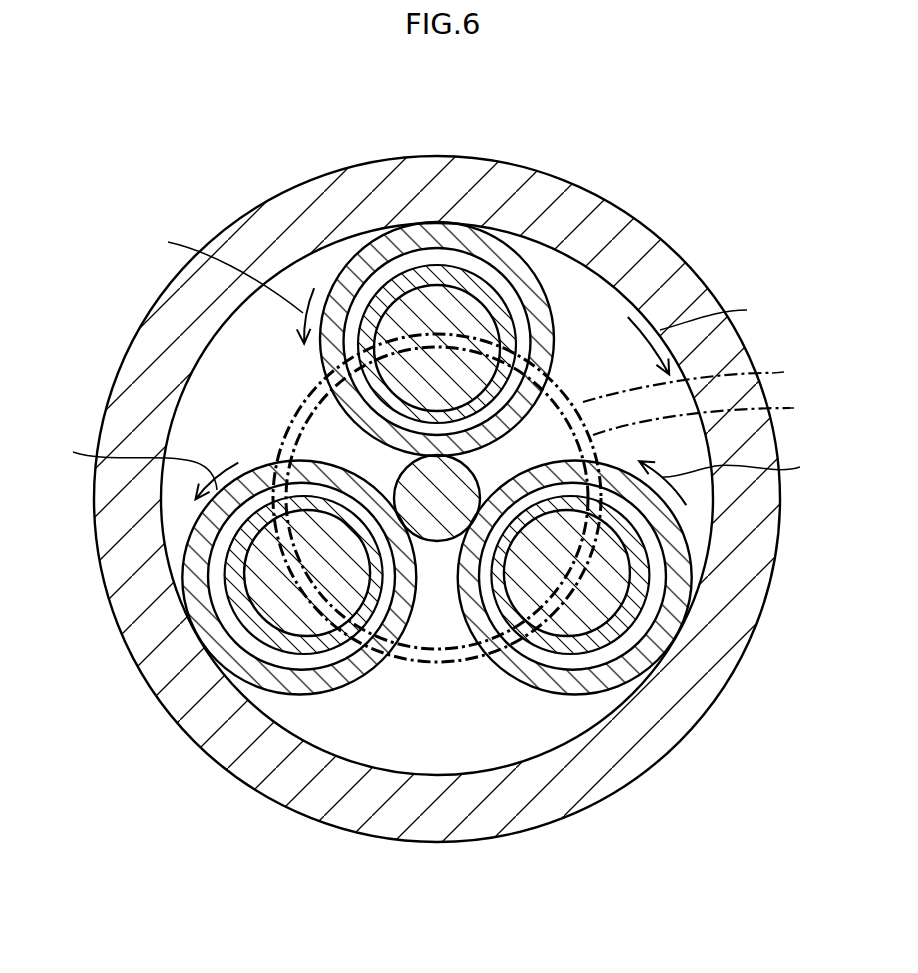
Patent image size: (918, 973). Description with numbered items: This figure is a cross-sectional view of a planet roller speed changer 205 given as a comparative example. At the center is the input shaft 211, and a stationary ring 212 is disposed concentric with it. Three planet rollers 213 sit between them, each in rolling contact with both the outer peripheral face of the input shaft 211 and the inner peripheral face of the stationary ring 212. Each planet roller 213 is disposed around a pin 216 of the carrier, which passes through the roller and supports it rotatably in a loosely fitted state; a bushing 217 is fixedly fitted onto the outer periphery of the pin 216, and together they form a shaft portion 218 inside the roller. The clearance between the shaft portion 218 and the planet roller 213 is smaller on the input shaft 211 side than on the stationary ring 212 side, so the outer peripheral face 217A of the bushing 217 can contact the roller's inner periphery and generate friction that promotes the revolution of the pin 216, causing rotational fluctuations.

The planet roller speed changer 205 is at (440, 503).
The input shaft 211 is at (450, 477).
The stationary ring 212 is at (433, 830).
The planet roller 213 is at (543, 323).
The pin 216 is at (413, 308).
The bushing 217 is at (436, 505).
The outer peripheral face of the bushing 217A is at (513, 268).
The shaft portion 218 is at (440, 490).